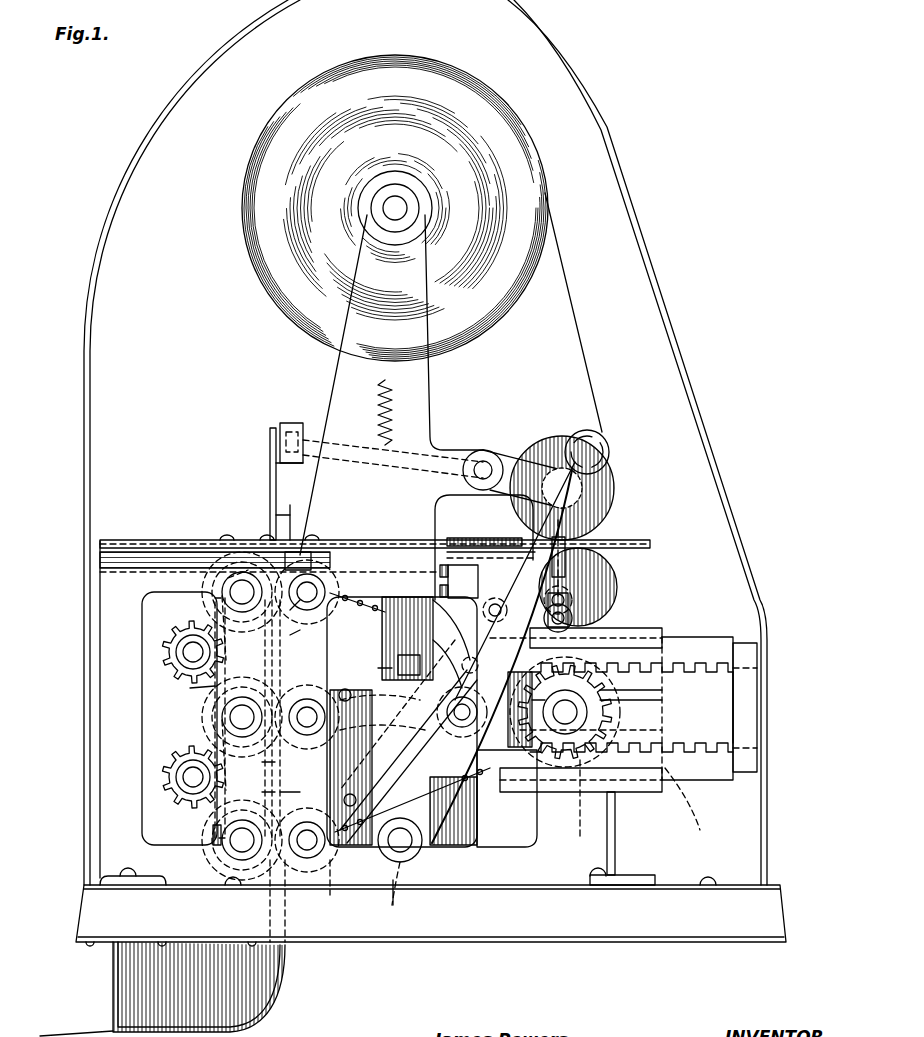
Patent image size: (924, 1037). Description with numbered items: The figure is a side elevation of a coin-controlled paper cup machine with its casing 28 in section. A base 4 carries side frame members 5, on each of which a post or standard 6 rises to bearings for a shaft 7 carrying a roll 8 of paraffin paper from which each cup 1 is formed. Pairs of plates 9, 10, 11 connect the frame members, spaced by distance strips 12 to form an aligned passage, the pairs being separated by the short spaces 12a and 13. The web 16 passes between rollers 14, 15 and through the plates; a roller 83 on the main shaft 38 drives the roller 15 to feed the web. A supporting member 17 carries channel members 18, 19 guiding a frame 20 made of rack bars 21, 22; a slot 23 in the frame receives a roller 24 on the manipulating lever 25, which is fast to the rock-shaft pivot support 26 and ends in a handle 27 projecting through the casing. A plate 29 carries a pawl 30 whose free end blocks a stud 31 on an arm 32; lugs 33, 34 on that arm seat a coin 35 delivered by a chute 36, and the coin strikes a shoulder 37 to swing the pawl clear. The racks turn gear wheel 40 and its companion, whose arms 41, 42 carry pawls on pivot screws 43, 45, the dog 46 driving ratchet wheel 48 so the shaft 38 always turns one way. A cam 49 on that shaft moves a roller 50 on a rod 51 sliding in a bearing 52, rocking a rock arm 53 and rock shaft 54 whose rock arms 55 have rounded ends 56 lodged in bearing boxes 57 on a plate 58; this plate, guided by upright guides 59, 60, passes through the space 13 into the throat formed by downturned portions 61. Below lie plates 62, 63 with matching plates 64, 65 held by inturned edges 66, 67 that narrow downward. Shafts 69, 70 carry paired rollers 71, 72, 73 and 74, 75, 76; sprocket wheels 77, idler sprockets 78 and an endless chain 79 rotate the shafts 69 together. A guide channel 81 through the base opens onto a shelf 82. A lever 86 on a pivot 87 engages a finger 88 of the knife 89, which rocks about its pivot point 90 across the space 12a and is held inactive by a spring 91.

The cup 1 is at (112, 545).
The base 4 is at (508, 942).
The side frame member 5 is at (166, 718).
The post or standard 6 is at (352, 372).
The shaft 7 is at (393, 212).
The roll of paraffin paper 8 is at (262, 228).
The pair of plates 9 is at (492, 552).
The pair of plates 10 is at (305, 552).
The pair of plates 11 is at (155, 552).
The distance strips 12 is at (190, 540).
The space 12a is at (465, 538).
The space 13 is at (240, 535).
The roller 14 is at (600, 497).
The roller 15 is at (600, 599).
The web of paper 16 is at (578, 330).
The supporting member 17 is at (615, 838).
The channel member 18 is at (630, 792).
The channel member 19 is at (662, 633).
The frame 20 is at (757, 645).
The rack bar 21 is at (712, 672).
The rack bar 22 is at (718, 764).
The slot 23 is at (411, 665).
The roller 24 is at (462, 707).
The manipulating lever 25 is at (422, 840).
The pivot support 26 is at (392, 901).
The handle 27 is at (609, 448).
The casing 28 is at (695, 371).
The plate 29 is at (402, 722).
The pawl 30 is at (368, 665).
The stud or boss 31 is at (397, 715).
The arm 32 is at (355, 800).
The lug 33 is at (457, 652).
The lug 34 is at (382, 739).
The coin or token 35 is at (380, 716).
The chute 36 is at (382, 628).
The shoulder 37 is at (353, 704).
The shaft 38 is at (508, 727).
The gear wheel 40 is at (500, 800).
The arm 41 is at (522, 706).
The arm 42 is at (600, 670).
The pivot screw 43 is at (461, 658).
The pivot screw 45 is at (650, 684).
The pawl or dog 46 is at (650, 700).
The ratchet wheel 48 is at (581, 800).
The cam 49 is at (620, 730).
The roller 50 is at (572, 622).
The rod 51 is at (575, 580).
The bearing 52 is at (552, 570).
The rock arm 53 is at (522, 479).
The rock shaft 54 is at (485, 450).
The rock arm 55 is at (400, 475).
The rounded free end 56 is at (296, 423).
The bearing box 57 is at (283, 432).
The plate 58 is at (291, 476).
The upright guide 59 is at (270, 492).
The upright guide 60 is at (297, 513).
The downturned portion 61 is at (302, 613).
The plate 62 is at (280, 668).
The plate 63 is at (302, 794).
The matching plate 64 is at (268, 648).
The matching plate 65 is at (253, 762).
The inturned side edge 66 is at (251, 720).
The inturned side edge 67 is at (255, 794).
The shaft 69 is at (230, 598).
The shaft 70 is at (318, 585).
The roller 71 is at (216, 579).
The roller 72 is at (215, 712).
The roller 73 is at (213, 838).
The roller 74 is at (304, 637).
The roller 75 is at (307, 716).
The roller 76 is at (327, 887).
The sprocket wheel 77 is at (225, 545).
The idler sprocket wheel 78 is at (165, 655).
The sprocket chain 79 is at (395, 590).
The guide channel 81 is at (285, 915).
The shelf 82 is at (262, 1012).
The roller 83 is at (682, 799).
The lever 86 is at (542, 607).
The pivot 87 is at (494, 601).
The finger 88 is at (436, 626).
The knife 89 is at (464, 576).
The pivot point 90 is at (459, 583).
The spring 91 is at (437, 654).